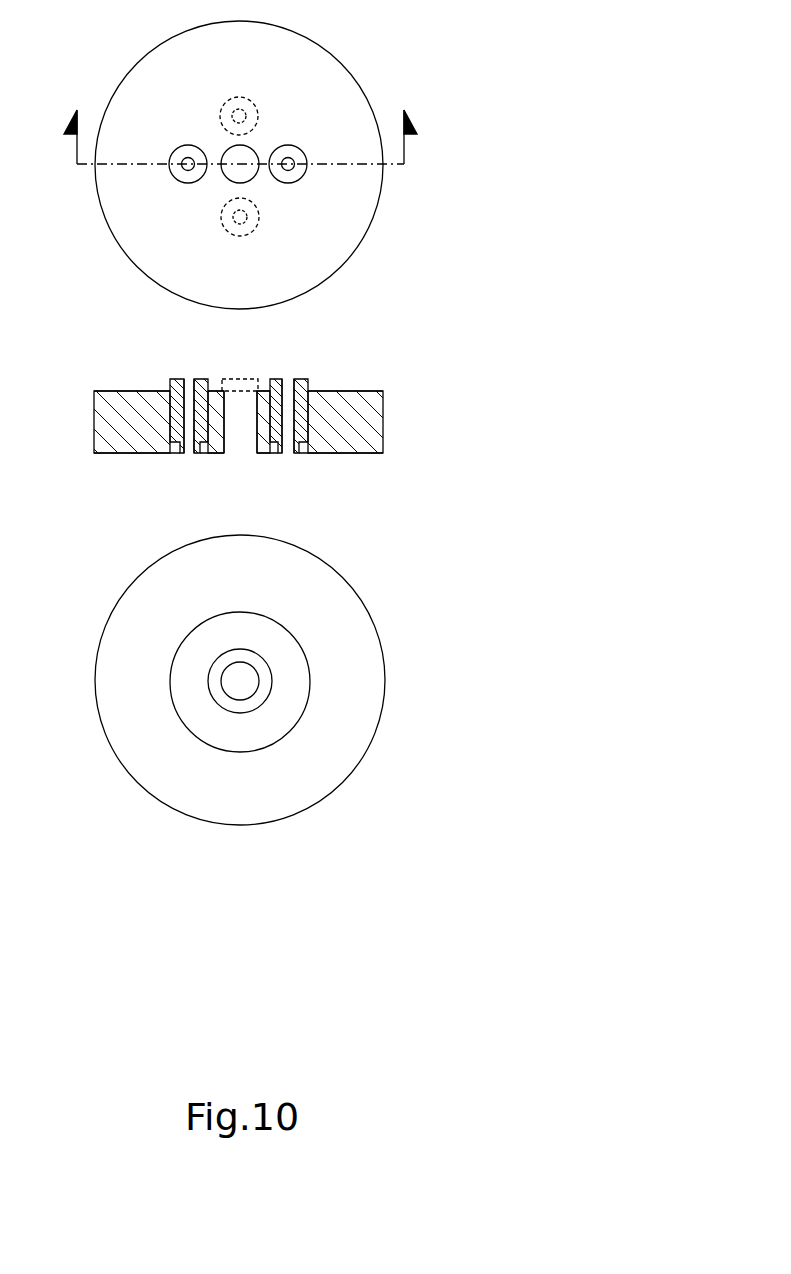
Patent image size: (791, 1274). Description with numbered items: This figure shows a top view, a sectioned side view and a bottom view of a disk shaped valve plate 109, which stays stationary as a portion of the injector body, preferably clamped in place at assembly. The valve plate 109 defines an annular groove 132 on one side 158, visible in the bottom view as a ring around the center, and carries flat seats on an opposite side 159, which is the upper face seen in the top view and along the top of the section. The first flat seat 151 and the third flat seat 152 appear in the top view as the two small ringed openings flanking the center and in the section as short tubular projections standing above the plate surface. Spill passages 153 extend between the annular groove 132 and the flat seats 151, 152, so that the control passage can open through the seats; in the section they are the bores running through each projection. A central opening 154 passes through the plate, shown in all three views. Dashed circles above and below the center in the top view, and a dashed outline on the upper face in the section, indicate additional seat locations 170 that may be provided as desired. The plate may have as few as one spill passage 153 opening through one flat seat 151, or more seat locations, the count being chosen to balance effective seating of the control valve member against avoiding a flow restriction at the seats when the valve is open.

The valve plate 109 is at (385, 178).
The first flat seat 151 is at (296, 157).
The third flat seat 152 is at (175, 152).
The spill passage 153 is at (189, 158).
The central hole 154 is at (238, 152).
The additional seat location 170 is at (228, 97).
The opposite side 159 is at (173, 193).
The one side 158 is at (121, 455).
The annular groove 132 is at (285, 438).